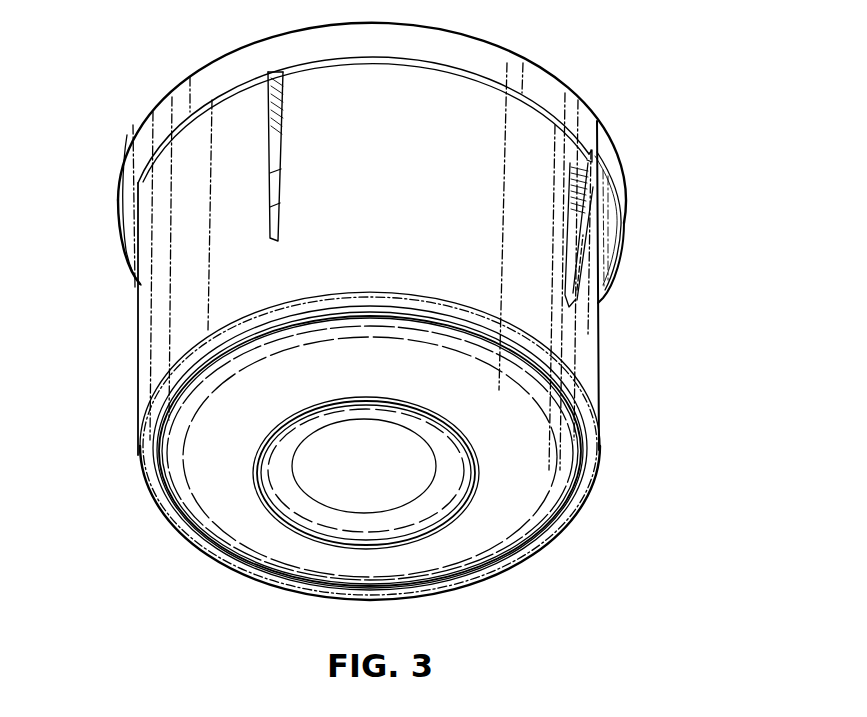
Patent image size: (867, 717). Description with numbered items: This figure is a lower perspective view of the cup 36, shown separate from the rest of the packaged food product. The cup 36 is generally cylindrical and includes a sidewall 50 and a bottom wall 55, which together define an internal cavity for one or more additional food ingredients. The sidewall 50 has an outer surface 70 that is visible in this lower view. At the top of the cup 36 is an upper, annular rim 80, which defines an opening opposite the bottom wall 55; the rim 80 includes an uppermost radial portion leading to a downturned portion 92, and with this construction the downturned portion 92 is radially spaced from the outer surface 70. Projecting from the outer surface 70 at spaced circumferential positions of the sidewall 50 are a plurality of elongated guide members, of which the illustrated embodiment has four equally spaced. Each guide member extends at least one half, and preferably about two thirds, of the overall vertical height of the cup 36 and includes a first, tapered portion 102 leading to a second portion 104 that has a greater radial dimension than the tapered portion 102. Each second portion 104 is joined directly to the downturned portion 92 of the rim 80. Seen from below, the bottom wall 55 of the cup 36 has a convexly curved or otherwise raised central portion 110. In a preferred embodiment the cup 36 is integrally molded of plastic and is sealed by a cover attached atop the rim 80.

The cup 36 is at (631, 97).
The upper annular rim 80 is at (141, 113).
The outer surface 70 is at (410, 187).
The second portion 104 is at (590, 170).
The downturned portion 92 is at (627, 233).
The first tapered portion 102 is at (577, 282).
The sidewall 50 is at (190, 295).
The bottom wall 55 is at (497, 537).
The raised central portion 110 is at (325, 497).